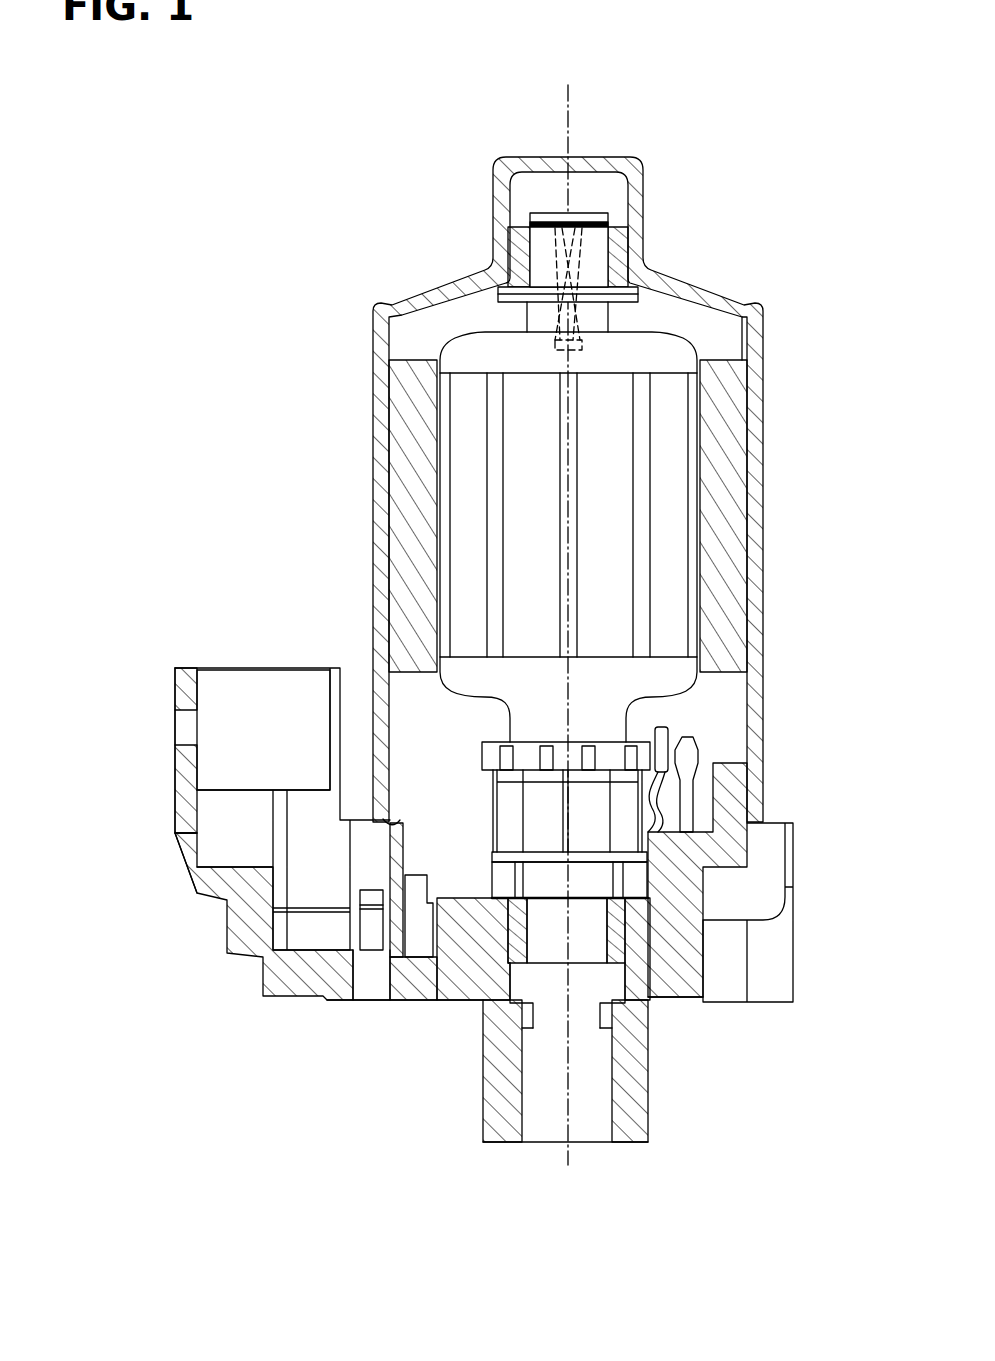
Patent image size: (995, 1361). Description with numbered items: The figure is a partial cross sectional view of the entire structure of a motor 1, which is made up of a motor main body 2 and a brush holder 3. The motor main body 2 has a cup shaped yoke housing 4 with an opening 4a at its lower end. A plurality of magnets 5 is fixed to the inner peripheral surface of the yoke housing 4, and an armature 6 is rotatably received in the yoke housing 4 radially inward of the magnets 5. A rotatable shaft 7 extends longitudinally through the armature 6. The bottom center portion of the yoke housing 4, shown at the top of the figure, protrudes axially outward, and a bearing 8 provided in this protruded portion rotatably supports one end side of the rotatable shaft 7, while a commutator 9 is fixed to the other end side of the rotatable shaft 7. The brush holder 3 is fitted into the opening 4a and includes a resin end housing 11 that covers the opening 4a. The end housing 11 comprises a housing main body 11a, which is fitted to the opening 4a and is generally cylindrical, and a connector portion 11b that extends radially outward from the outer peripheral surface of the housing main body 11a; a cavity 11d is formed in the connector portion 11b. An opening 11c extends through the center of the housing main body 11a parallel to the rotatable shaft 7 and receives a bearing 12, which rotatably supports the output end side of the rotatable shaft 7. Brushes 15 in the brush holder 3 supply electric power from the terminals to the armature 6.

The motor 1 is at (269, 140).
The motor main body 2 is at (348, 270).
The brush holder 3 is at (770, 1042).
The yoke housing 4 is at (758, 370).
The opening 4a is at (397, 823).
The magnets 5 is at (733, 466).
The armature 6 is at (467, 462).
The rotatable shaft 7 is at (540, 247).
The bearing 8 is at (618, 243).
The commutator 9 is at (507, 797).
The end housing 11 is at (275, 1005).
The housing main body 11a is at (340, 1215).
The connector portion 11b is at (142, 725).
The opening 11c is at (522, 1087).
The connector cavity 11d is at (205, 688).
The bearing 12 is at (627, 943).
The brushes 15 is at (662, 732).